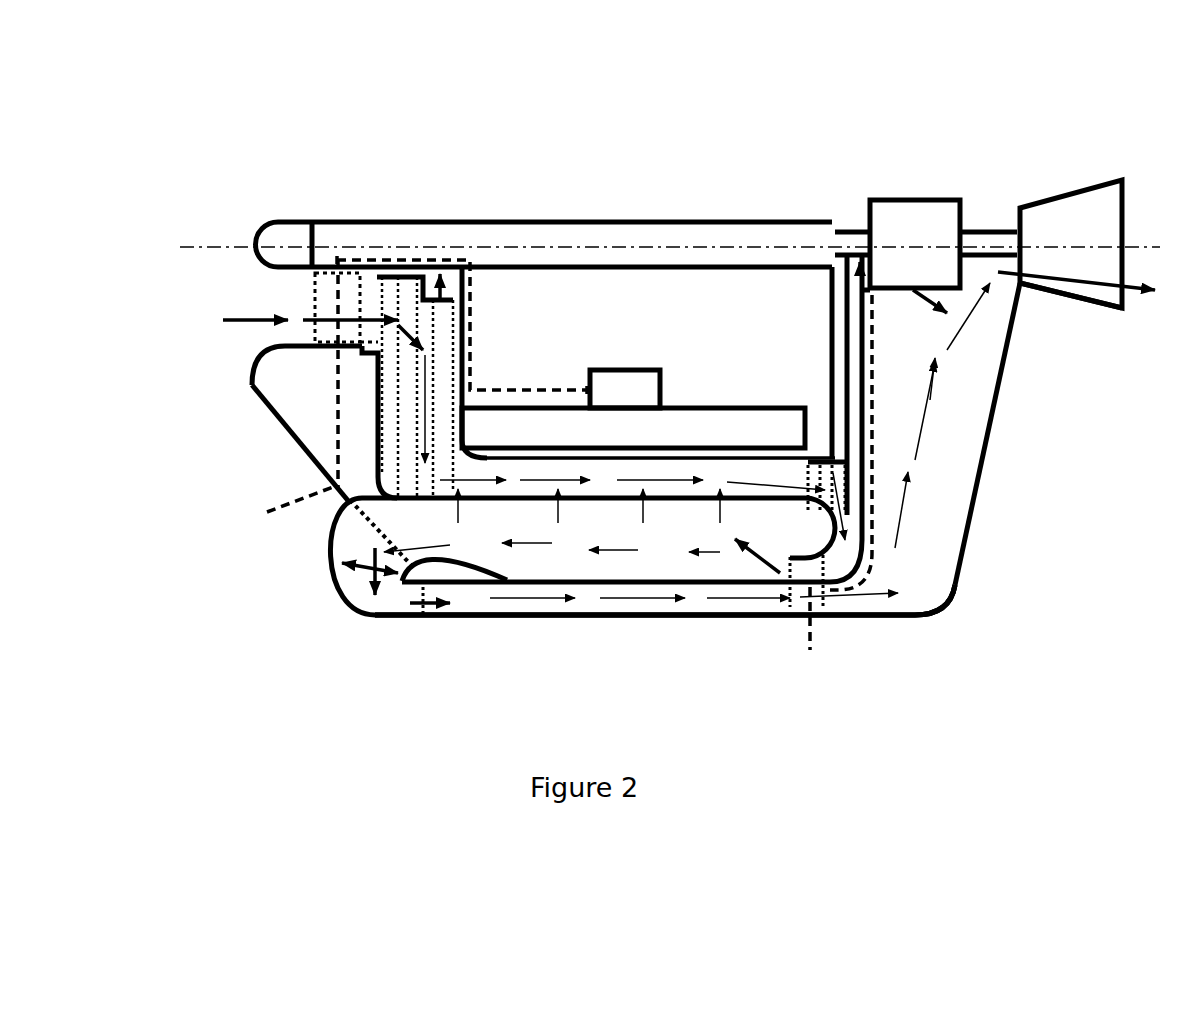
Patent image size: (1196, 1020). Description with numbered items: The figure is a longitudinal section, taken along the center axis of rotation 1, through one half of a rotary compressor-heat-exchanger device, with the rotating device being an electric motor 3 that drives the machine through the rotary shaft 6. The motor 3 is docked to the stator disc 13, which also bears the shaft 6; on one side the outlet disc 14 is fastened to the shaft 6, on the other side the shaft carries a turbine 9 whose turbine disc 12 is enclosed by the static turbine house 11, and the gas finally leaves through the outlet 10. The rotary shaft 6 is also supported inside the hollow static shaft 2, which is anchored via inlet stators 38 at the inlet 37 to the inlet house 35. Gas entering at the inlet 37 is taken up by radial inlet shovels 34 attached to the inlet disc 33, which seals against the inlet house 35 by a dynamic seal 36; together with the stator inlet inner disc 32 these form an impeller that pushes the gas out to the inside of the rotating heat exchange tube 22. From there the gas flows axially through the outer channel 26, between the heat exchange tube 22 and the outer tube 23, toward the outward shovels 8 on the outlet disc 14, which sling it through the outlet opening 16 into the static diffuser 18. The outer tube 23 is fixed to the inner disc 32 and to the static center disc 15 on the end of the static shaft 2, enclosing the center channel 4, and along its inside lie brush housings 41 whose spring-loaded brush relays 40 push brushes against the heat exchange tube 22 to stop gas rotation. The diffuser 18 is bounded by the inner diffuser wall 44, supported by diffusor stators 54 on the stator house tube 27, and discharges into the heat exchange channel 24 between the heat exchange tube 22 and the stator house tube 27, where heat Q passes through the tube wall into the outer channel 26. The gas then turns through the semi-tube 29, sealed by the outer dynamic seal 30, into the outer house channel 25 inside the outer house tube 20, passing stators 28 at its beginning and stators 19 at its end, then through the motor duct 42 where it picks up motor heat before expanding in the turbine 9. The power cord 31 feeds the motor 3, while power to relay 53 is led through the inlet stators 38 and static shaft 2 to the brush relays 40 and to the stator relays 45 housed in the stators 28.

The center axis of rotation 1 is at (674, 247).
The static shaft 2 is at (332, 218).
The electric motor 3 is at (918, 232).
The center channel 4 is at (527, 327).
The rotary shaft 6 is at (992, 232).
The outward shovels 8 is at (873, 560).
The turbine 9 is at (1108, 177).
The outlet 10 is at (1097, 289).
The turbine house 11 is at (1070, 298).
The turbine disc 12 is at (1003, 378).
The stator disc 13 is at (863, 358).
The outlet disc 14 is at (853, 388).
The center disc 15 is at (838, 420).
The outlet opening 16 is at (1053, 598).
The diffuser 18 is at (850, 548).
The stator outlets 19 is at (822, 605).
The outer house tube 20 is at (552, 620).
The heat exchange tube 22 is at (693, 500).
The outer tube 23 is at (760, 455).
The heat exchange channel 24 is at (663, 548).
The outer house channel 25 is at (588, 597).
The outer channel 26 is at (518, 480).
The stator house tube 27 is at (760, 585).
The stators 28 is at (385, 590).
The semi-tube 29 is at (337, 578).
The outer dynamic seal 30 is at (353, 503).
The power cord 31 is at (815, 632).
The inlet inner disc 32 is at (392, 420).
The inlet disc 33 is at (453, 400).
The inlet shovels 34 is at (383, 386).
The inlet house 35 is at (252, 385).
The dynamic seal 36 is at (360, 350).
The inlet 37 is at (319, 368).
The inlet stators 38 is at (315, 290).
The brush relay 40 is at (625, 385).
The brush housings 41 is at (707, 433).
The motor duct 42 is at (930, 508).
The inner diffuser wall 44 is at (847, 597).
The stator relay 45 is at (430, 573).
The power to relay 53 is at (323, 527).
The diffusor stators 54 is at (815, 600).